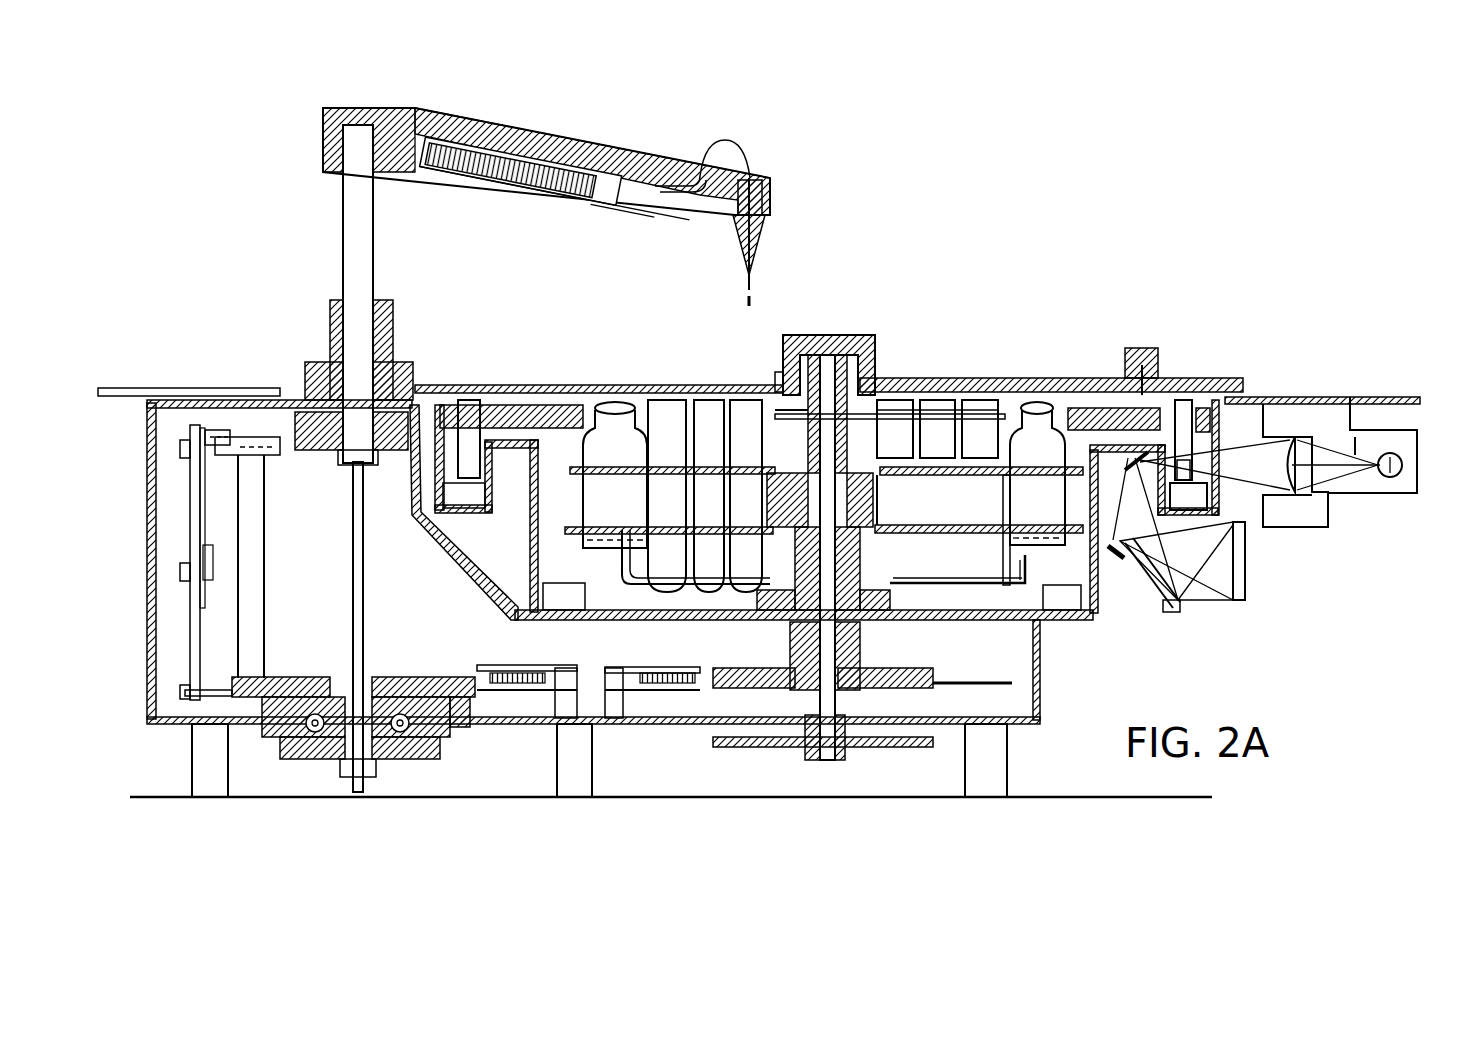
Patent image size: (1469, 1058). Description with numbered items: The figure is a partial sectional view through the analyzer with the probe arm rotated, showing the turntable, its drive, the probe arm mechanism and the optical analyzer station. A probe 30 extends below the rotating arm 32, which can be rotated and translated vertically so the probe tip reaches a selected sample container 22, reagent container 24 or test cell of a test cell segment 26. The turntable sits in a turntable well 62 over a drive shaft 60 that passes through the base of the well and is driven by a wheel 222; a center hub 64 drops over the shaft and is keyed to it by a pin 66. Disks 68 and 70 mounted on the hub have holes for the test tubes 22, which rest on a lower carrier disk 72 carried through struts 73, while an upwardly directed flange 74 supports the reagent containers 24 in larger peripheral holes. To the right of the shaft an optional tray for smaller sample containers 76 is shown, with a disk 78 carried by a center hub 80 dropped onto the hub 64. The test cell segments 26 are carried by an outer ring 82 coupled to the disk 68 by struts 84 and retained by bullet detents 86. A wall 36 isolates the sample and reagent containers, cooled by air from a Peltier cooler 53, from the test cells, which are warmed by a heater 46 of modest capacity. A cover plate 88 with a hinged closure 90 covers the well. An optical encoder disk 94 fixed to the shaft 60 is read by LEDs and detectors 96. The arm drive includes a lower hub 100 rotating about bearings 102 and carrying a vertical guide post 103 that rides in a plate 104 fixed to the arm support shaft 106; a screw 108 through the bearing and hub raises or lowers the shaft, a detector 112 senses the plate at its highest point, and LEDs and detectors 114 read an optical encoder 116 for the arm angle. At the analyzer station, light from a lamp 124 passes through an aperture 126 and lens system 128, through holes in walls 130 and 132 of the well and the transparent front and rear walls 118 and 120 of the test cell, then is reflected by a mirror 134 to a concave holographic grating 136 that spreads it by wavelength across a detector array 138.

The sample containers 22 is at (690, 580).
The reagent containers 24 is at (607, 408).
The test cell segments 26 is at (470, 405).
The probe 30 is at (757, 296).
The rotating arm 32 is at (540, 130).
The wall 36 is at (492, 465).
The heater 46 is at (464, 490).
The Peltier cooler 53 is at (578, 620).
The drive shaft 60 is at (822, 440).
The turntable well 62 is at (1090, 618).
The center hub 64 is at (877, 500).
The pin 66 is at (782, 527).
The disk 68 is at (982, 475).
The disk 70 is at (957, 562).
The lower carrier disk 72 is at (912, 578).
The struts 73 is at (618, 565).
The upwardly directed flange 74 is at (1027, 565).
The smaller sample containers 76 is at (980, 405).
The disk 78 is at (905, 430).
The center hub 80 is at (848, 352).
The outer ring 82 is at (542, 405).
The struts 84 is at (590, 462).
The bullet detents 86 is at (1170, 398).
The cover plate 88 is at (698, 385).
The hinged closure 90 is at (1075, 378).
The optical encoder disk 94 is at (970, 683).
The set of LEDs and detectors 96 is at (672, 668).
The lower hub 100 is at (445, 745).
The bearings 102 is at (398, 680).
The vertical guide post 103 is at (268, 625).
The plate 104 is at (318, 455).
The arm support shaft 106 is at (378, 272).
The screw 108 is at (364, 618).
The detector 112 is at (198, 432).
The set of LEDs and detectors 114 is at (512, 666).
The optical encoder 116 is at (472, 700).
The front wall 118 is at (1190, 462).
The rear wall 120 is at (1210, 410).
The lamp 124 is at (1395, 478).
The aperture 126 is at (1352, 485).
The lens system 128 is at (1293, 437).
The wall 130 is at (1215, 500).
The wall 132 is at (1112, 560).
The mirror 134 is at (1130, 462).
The concave holographic grating 136 is at (1170, 612).
The detector array 138 is at (1245, 580).
The wheel 222 is at (882, 748).